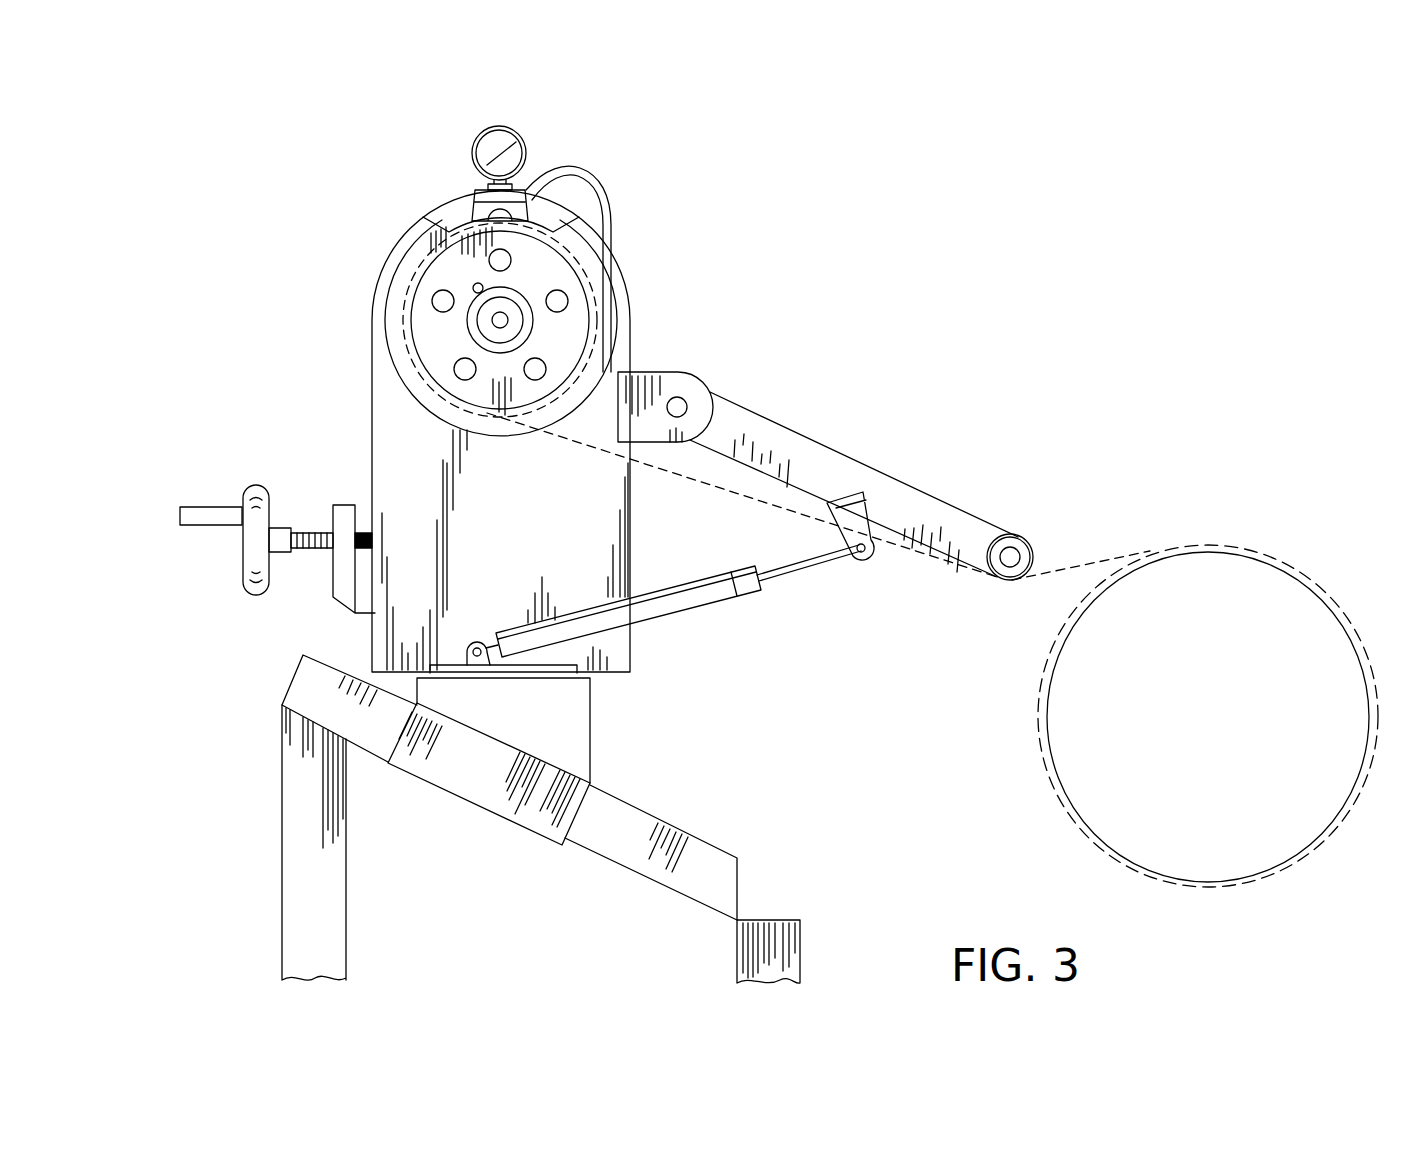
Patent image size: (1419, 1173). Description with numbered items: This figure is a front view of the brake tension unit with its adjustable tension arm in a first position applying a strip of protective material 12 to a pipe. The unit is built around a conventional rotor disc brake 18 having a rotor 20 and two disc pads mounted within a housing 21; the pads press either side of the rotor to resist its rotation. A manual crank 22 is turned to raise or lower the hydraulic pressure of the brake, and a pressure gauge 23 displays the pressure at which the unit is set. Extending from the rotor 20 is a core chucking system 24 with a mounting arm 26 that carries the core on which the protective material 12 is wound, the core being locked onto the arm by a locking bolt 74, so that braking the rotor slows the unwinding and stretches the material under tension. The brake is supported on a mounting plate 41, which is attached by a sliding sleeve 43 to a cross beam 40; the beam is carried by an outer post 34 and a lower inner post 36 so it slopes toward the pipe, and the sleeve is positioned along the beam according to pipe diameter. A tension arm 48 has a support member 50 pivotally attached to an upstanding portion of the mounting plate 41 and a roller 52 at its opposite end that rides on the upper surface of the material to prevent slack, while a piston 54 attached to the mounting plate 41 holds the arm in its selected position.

The protective material 12 is at (1210, 543).
The rotor disc brake 18 is at (615, 258).
The rotor 20 is at (597, 280).
The housing 21 is at (428, 217).
The manual crank 22 is at (210, 507).
The pressure gauge 23 is at (473, 133).
The core chucking system 24 is at (400, 308).
The mounting arm 26 is at (518, 325).
The outer post 34 is at (287, 818).
The inner post 36 is at (770, 922).
The cross beam 40 is at (667, 823).
The mounting plate 41 is at (427, 463).
The sliding sleeve 43 is at (477, 787).
The tension arm 48 is at (814, 434).
The support member 50 is at (870, 473).
The roller 52 is at (1015, 537).
The piston 54 is at (688, 613).
The locking bolt 74 is at (468, 345).